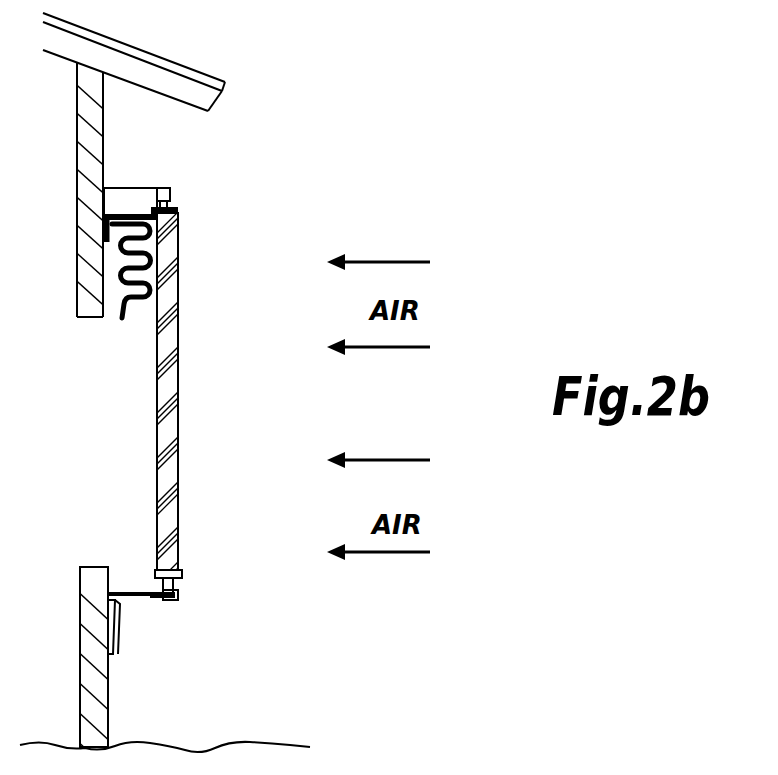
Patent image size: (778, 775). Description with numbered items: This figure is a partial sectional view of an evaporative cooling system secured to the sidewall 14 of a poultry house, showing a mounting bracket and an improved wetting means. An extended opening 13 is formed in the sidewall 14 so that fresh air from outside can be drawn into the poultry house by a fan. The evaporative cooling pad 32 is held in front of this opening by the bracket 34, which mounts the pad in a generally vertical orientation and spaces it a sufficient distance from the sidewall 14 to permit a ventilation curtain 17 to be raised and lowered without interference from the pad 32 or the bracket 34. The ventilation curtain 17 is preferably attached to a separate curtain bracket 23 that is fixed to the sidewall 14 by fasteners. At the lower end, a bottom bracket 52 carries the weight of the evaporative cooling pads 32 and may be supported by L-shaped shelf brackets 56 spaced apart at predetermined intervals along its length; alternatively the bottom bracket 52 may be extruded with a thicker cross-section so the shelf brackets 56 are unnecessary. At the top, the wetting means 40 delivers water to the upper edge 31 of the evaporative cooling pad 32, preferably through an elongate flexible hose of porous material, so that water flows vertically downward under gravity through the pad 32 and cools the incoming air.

The extended opening 13 is at (153, 407).
The sidewall 14 is at (88, 135).
The ventilation curtain 17 is at (127, 302).
The curtain bracket 23 is at (107, 227).
The upper edge 31 is at (177, 230).
The evaporative cooling pad 32 is at (178, 548).
The bracket 34 is at (150, 188).
The wetting means 40 is at (180, 193).
The bottom bracket 52 is at (163, 600).
The L-shaped shelf bracket 56 is at (120, 612).